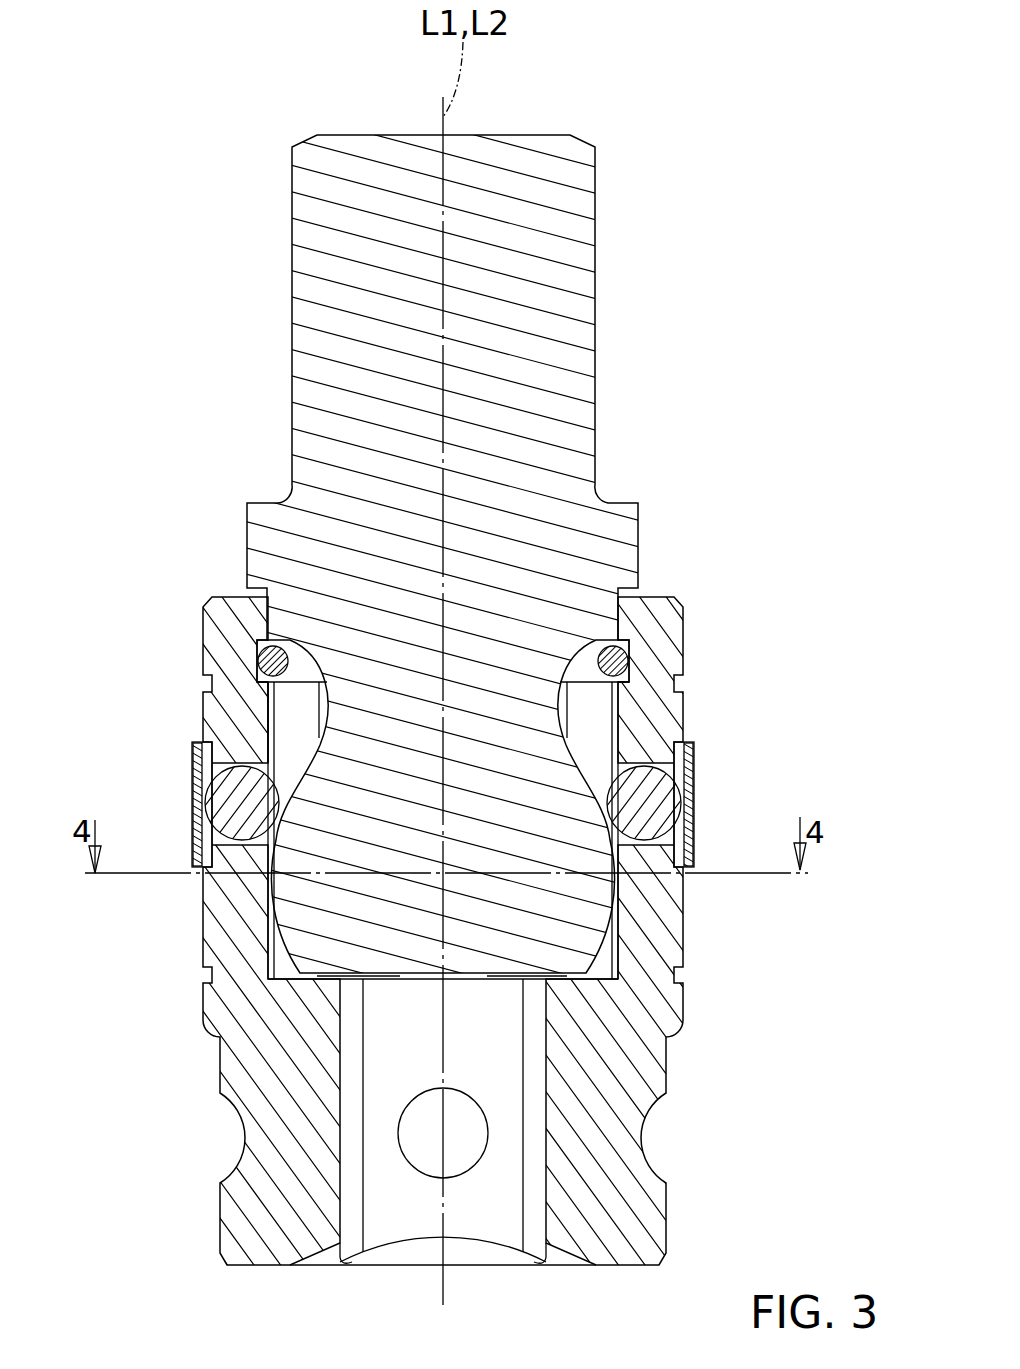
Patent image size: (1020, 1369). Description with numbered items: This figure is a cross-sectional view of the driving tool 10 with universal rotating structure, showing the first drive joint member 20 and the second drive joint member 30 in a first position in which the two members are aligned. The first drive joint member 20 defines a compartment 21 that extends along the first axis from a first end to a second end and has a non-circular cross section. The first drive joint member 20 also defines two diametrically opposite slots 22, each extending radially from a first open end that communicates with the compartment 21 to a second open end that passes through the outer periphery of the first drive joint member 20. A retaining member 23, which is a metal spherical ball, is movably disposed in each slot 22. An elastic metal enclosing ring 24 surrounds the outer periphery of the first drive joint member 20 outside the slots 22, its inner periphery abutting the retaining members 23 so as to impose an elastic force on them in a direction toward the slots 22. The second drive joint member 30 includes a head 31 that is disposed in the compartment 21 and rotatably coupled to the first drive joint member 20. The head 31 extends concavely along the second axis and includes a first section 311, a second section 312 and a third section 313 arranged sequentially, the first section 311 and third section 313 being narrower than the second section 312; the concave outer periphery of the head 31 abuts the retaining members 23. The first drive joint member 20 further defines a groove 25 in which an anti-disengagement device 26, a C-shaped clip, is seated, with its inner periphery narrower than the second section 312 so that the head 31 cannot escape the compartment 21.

The driving tool 10 is at (210, 256).
The first drive joint member 20 is at (703, 1046).
The compartment 21 is at (606, 738).
The slot 22 is at (214, 772).
The retaining member 23 is at (242, 793).
The enclosing ring 24 is at (198, 820).
The groove 25 is at (257, 641).
The anti-disengagement device 26 is at (258, 660).
The second drive joint member 30 is at (624, 350).
The head 31 is at (628, 985).
The first section 311 is at (318, 724).
The second section 312 is at (672, 849).
The third section 313 is at (620, 948).